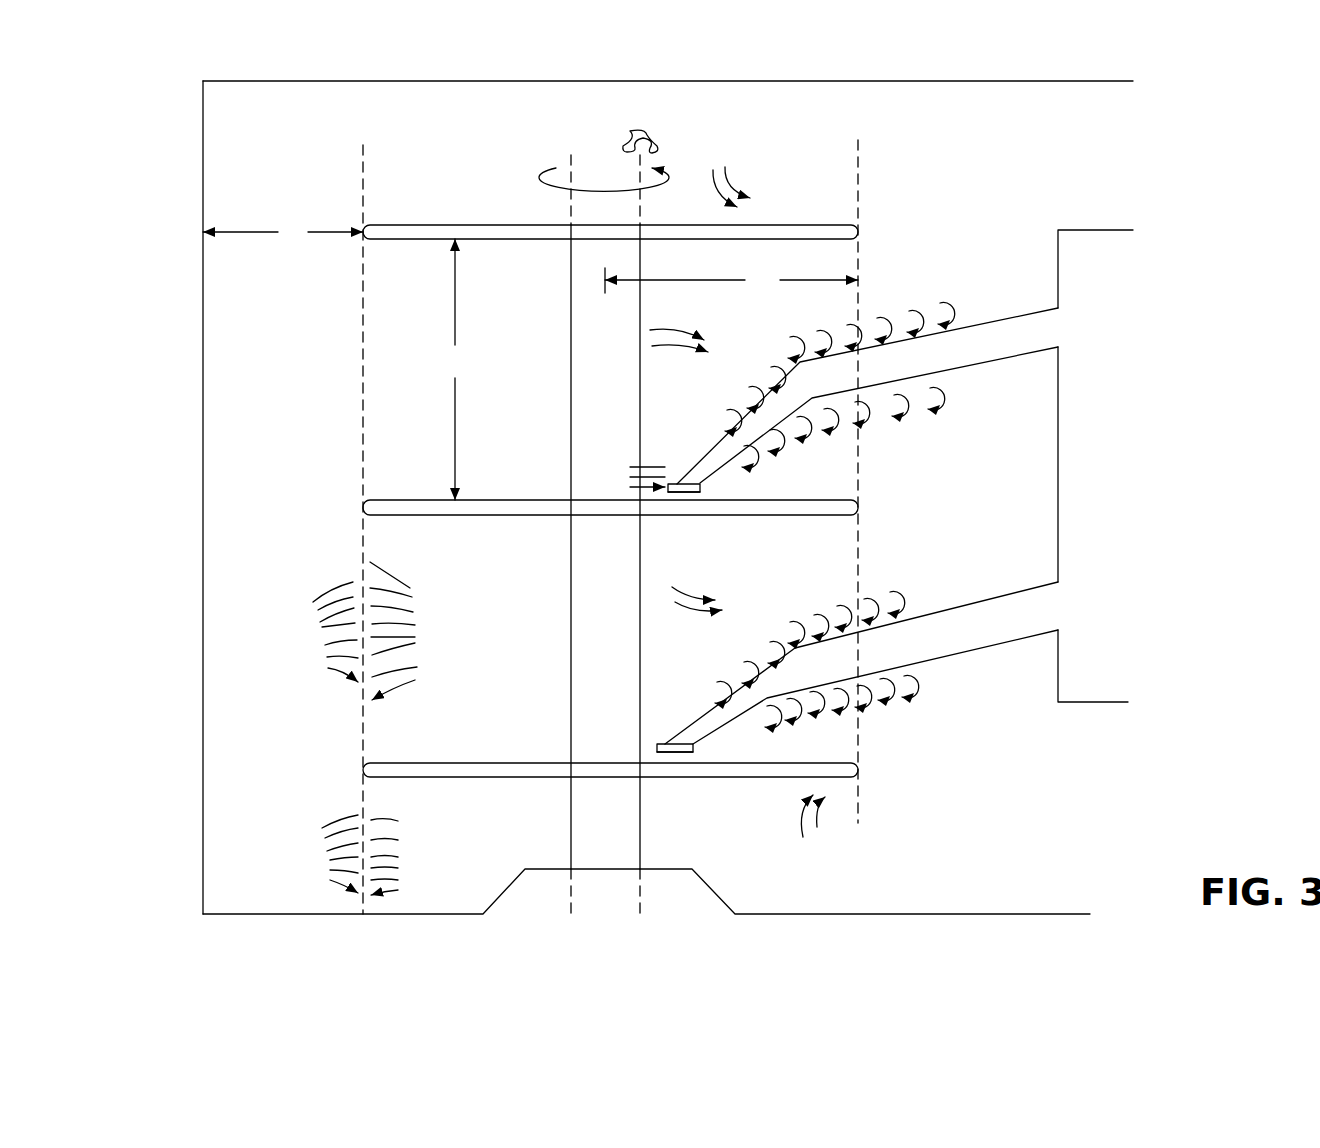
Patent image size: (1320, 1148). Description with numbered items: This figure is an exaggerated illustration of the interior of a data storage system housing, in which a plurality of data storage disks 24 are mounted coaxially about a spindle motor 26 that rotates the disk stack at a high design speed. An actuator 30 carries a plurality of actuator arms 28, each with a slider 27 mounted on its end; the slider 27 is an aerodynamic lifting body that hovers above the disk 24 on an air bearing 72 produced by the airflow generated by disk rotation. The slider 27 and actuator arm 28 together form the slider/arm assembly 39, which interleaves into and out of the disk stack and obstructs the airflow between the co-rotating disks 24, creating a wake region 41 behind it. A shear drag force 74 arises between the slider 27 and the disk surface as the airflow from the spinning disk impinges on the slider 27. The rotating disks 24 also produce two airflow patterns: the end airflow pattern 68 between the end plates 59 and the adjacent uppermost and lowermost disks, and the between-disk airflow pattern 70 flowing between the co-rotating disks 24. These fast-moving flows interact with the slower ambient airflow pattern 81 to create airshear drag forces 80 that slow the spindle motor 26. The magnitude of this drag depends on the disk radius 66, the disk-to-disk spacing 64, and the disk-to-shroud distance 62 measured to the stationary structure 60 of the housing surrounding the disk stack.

The data storage disk 24 is at (508, 225).
The spindle motor 26 is at (604, 522).
The slider 27 is at (678, 482).
The actuator arm 28 is at (861, 526).
The actuator 30 is at (1099, 466).
The slider/arm assembly 39 is at (812, 463).
The wake region 41 is at (812, 340).
The end plate 59 is at (607, 81).
The stationary structure 60 is at (203, 332).
The disk-to-shroud distance X 62 is at (262, 232).
The disk-to-disk spacing H 64 is at (455, 300).
The disk radius R 66 is at (664, 280).
The airflow pattern AF_E 68 is at (775, 181).
The airflow pattern AF_B 70 is at (695, 318).
The air bearing 72 is at (710, 497).
The shear drag force D_S 74 is at (627, 472).
The shear drag force D_A 80 is at (313, 560).
The ambient airflow pattern AF_A 81 is at (232, 600).